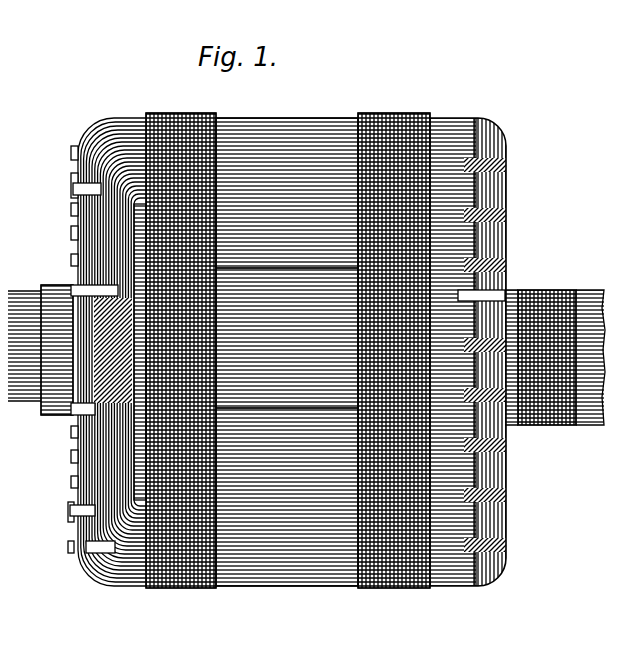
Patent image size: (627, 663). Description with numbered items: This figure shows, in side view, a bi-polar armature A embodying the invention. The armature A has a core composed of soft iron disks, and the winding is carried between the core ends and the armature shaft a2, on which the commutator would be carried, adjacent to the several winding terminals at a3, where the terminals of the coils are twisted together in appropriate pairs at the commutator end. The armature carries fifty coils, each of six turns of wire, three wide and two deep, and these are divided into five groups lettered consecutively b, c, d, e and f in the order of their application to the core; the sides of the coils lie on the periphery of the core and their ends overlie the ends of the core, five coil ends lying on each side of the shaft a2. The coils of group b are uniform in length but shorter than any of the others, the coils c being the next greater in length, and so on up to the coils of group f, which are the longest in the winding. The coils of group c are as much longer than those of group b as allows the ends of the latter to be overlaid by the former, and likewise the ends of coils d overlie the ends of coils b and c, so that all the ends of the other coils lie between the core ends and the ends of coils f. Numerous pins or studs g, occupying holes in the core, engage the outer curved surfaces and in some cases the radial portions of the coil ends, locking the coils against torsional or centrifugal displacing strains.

The bi-polar armature A is at (292, 345).
The armature shaft a2 is at (63, 340).
The winding terminals at the commutator end a3 is at (555, 345).
The first group of coils b is at (287, 338).
The second group of coils c is at (265, 567).
The third group of coils d is at (287, 193).
The fourth group of coils e is at (287, 497).
The fifth group of coils f is at (265, 115).
The pins or studs g is at (493, 290).